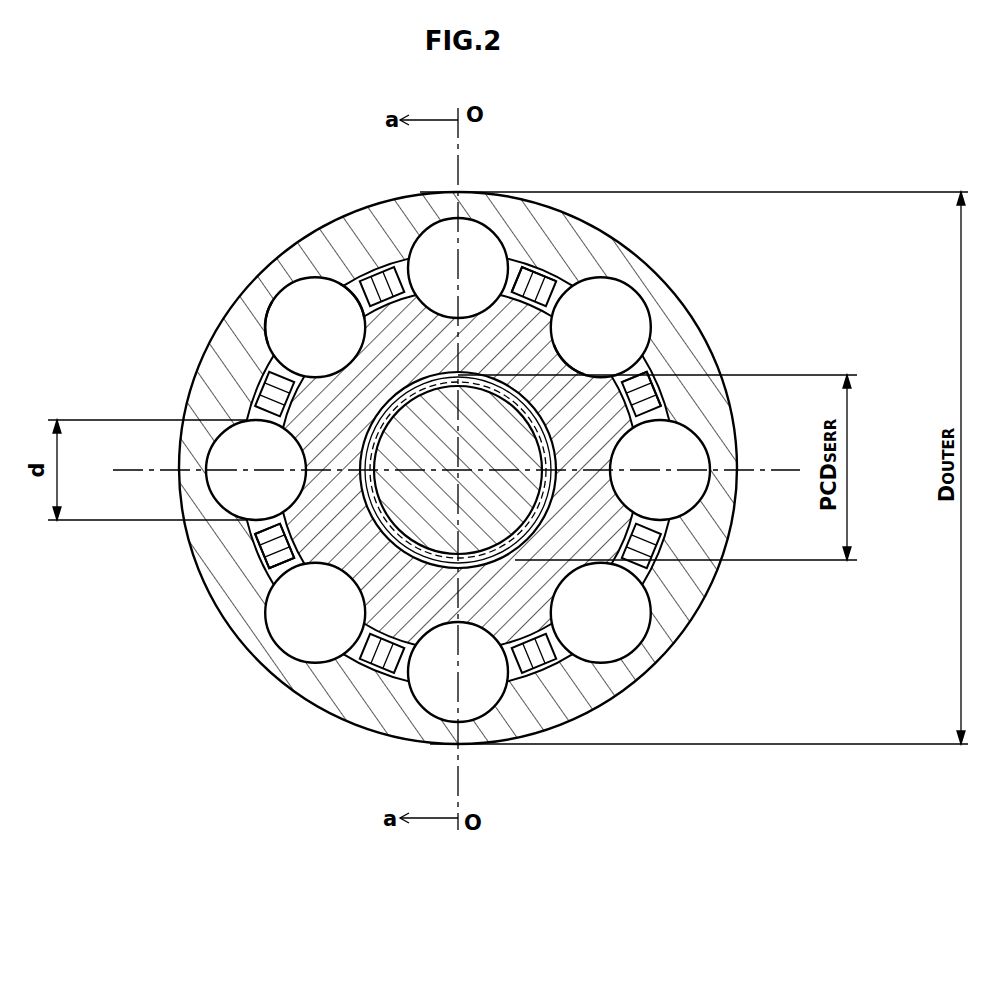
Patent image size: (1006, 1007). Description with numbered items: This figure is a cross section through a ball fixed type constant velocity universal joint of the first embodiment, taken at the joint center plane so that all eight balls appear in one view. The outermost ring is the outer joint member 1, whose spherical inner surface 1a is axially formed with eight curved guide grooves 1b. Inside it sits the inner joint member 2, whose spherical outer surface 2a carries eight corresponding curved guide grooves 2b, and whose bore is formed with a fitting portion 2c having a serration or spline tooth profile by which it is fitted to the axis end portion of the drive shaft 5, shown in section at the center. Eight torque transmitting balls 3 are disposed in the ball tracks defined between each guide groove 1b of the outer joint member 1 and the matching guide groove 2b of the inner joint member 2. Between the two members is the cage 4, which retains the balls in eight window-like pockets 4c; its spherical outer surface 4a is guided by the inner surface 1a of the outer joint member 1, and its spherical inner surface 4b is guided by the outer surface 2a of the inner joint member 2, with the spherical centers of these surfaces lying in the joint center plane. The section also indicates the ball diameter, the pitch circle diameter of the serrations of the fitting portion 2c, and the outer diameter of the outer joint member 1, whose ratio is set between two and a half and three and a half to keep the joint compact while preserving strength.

The outer joint member 1 is at (293, 242).
The spherical inner surface 1a is at (358, 300).
The curved guide grooves 1b is at (284, 336).
The inner joint member 2 is at (561, 324).
The spherical outer surface 2a is at (648, 368).
The curved guide grooves 2b is at (578, 358).
The fitting portion 2c is at (505, 403).
The torque transmitting balls 3 is at (402, 234).
The cage 4 is at (243, 549).
The outer surface of the cage 4a is at (243, 549).
The inner surface of the cage 4b is at (270, 600).
The pockets 4c is at (490, 242).
The drive shaft 5 is at (458, 470).